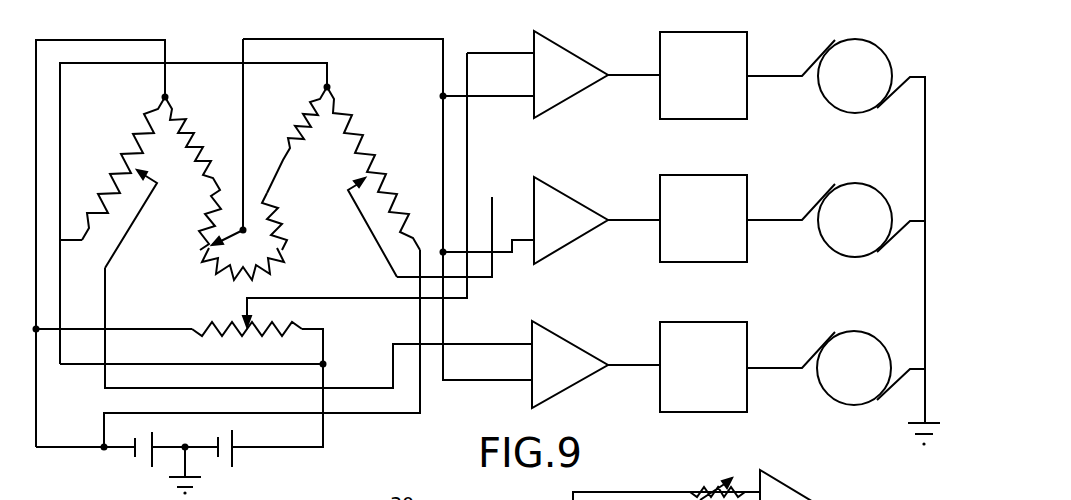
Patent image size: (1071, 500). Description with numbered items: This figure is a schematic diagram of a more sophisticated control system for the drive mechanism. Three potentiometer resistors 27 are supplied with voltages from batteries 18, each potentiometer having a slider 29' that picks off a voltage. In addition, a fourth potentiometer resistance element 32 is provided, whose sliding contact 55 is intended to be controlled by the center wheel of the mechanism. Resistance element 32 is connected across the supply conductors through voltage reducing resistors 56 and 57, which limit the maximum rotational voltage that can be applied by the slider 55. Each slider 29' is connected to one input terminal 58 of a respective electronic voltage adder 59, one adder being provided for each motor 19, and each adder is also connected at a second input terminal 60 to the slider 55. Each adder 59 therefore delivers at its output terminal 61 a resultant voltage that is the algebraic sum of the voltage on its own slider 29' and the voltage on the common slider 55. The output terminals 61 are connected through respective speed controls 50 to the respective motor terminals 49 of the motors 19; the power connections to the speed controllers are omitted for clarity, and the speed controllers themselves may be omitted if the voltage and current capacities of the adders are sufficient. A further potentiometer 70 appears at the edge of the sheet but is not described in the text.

The voltage reducing resistor 56 is at (195, 132).
The slider 29' is at (166, 212).
The sliding contact 55 is at (231, 235).
The fourth potentiometer resistance element 32 is at (287, 233).
The voltage reducing resistor 57 is at (291, 139).
The potentiometer resistor 27 is at (375, 151).
The battery 18 is at (216, 438).
The input terminal 58 is at (506, 51).
The second input terminal 60 is at (510, 98).
The electronic voltage adder 59 is at (555, 178).
The output terminal 61 is at (605, 215).
The speed control 50 is at (705, 175).
The motor terminal 49 is at (775, 220).
The motor 19 is at (862, 183).
The potentiometer 70 is at (701, 486).